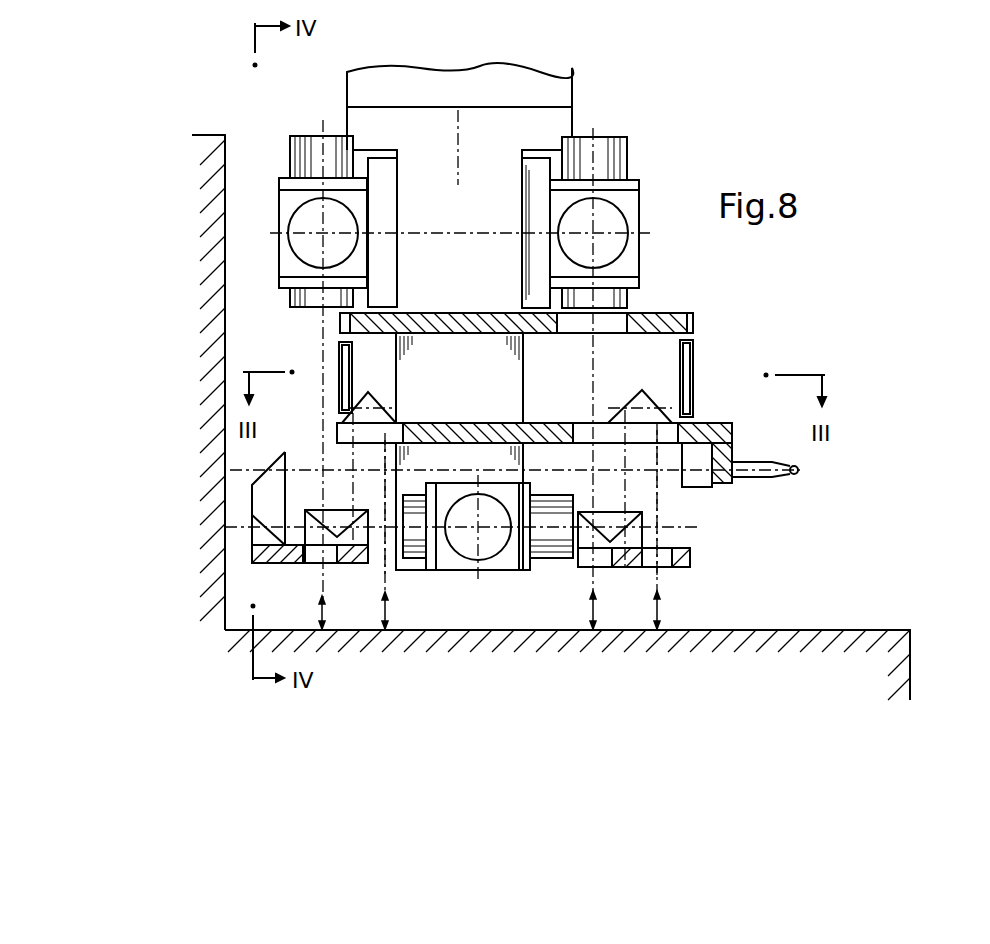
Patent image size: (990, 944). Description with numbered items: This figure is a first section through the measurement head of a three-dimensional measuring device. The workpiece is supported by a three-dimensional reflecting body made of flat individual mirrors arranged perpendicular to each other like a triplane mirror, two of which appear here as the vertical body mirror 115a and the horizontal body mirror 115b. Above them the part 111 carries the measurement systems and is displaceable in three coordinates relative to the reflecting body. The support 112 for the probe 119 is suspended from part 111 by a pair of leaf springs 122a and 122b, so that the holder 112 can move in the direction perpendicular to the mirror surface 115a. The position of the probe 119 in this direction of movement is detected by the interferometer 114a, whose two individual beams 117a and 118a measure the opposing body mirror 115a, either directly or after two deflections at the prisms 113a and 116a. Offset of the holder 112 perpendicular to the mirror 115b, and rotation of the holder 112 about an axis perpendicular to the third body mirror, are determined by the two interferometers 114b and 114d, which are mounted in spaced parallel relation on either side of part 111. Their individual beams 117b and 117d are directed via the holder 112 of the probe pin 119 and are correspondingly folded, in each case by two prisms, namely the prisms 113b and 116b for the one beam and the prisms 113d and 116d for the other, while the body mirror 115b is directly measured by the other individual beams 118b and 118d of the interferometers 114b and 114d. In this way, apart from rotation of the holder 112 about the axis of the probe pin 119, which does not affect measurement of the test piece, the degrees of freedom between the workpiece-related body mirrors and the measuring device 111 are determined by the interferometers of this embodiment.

The part carrying the measurement systems 111 is at (550, 121).
The support for the probe 112 is at (542, 427).
The prism 113a is at (262, 497).
The prism 113b is at (642, 515).
The prism 113d is at (343, 566).
The interferometer 114a is at (493, 548).
The interferometer 114b is at (607, 218).
The interferometer 114d is at (308, 222).
The flat individual mirror 115a is at (227, 338).
The flat individual mirror 115b is at (852, 632).
The prism 116a is at (700, 486).
The prism 116b is at (640, 393).
The prism 116d is at (370, 398).
The individual beam 117a is at (250, 470).
The individual beam 117b is at (657, 575).
The individual beam 117d is at (385, 576).
The individual beam 118a is at (236, 531).
The individual beam 118b is at (593, 575).
The individual beam 118d is at (323, 577).
The probe 119 is at (786, 477).
The leaf spring 122a is at (693, 355).
The leaf spring 122b is at (340, 361).